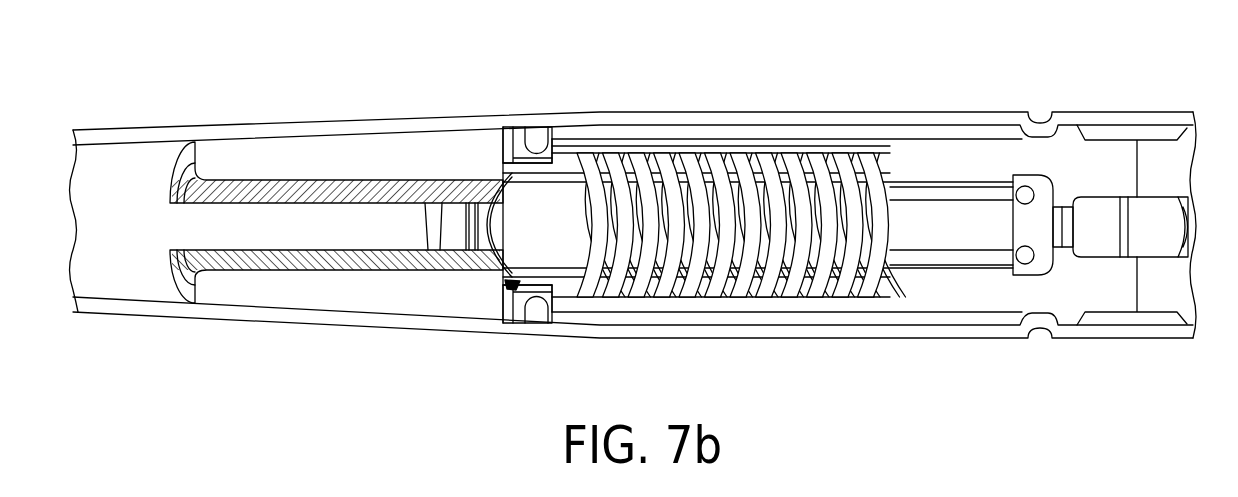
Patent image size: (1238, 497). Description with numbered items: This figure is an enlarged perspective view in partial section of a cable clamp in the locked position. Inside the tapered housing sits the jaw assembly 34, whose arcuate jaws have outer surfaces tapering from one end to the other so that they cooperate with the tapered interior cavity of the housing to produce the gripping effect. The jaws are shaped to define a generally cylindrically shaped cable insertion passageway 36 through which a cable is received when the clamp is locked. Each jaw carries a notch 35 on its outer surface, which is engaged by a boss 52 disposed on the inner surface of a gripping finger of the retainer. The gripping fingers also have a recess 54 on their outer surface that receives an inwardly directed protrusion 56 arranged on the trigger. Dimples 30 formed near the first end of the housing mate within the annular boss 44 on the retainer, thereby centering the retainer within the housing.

The dimples 30 is at (1047, 112).
The jaw assembly 34 is at (388, 140).
The notch 35 is at (512, 284).
The cable insertion passageway 36 is at (305, 225).
The annular boss 44 is at (1072, 140).
The boss 52 is at (523, 140).
The recess 54 is at (570, 140).
The inwardly directed protrusion 56 is at (533, 127).